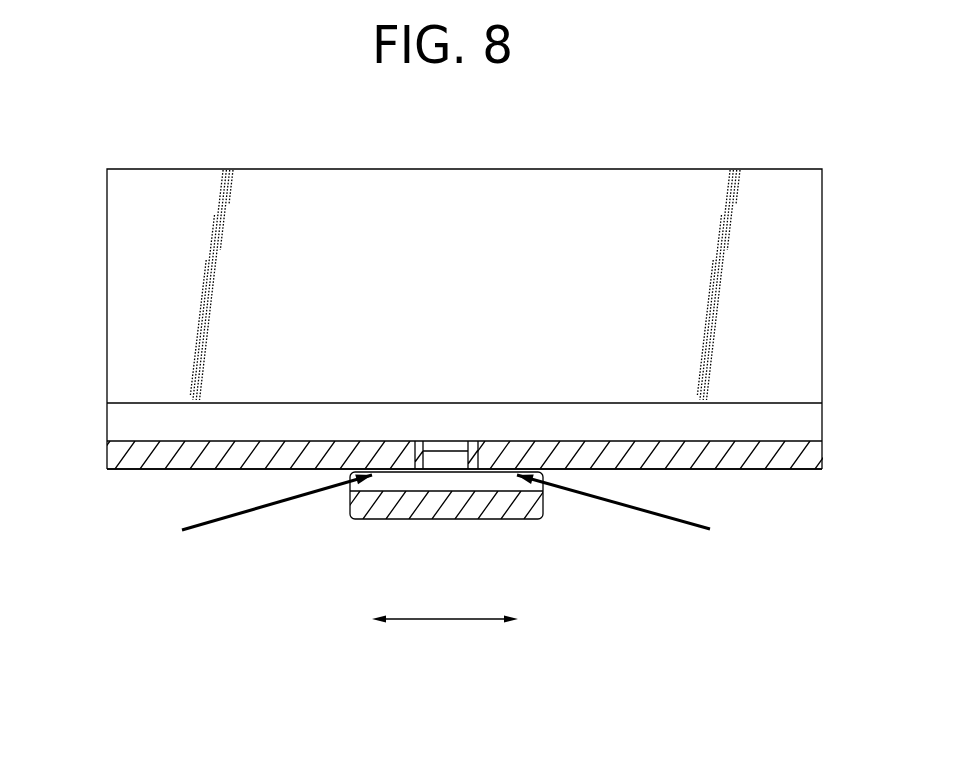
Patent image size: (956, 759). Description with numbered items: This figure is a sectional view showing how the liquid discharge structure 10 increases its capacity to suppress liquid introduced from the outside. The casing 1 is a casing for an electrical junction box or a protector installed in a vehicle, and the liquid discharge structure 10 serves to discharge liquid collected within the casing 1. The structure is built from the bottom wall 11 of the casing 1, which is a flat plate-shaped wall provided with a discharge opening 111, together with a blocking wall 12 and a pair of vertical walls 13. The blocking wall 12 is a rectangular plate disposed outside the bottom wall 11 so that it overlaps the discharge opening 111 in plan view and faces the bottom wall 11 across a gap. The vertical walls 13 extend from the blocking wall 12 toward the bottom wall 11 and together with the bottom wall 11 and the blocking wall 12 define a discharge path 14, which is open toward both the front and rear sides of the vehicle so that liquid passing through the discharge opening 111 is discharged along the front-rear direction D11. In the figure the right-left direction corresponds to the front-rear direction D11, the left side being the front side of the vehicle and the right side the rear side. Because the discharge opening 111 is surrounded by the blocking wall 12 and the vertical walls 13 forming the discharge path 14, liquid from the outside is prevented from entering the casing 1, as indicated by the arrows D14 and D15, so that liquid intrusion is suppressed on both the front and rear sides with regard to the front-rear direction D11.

The casing 1 is at (465, 153).
The liquid discharge structure 10 is at (143, 488).
The bottom wall 11 is at (795, 470).
The discharge opening 111 is at (458, 448).
The blocking wall 12 is at (443, 520).
The vertical walls 13 is at (472, 477).
The discharge path 14 is at (405, 482).
The arrow D14 is at (187, 518).
The arrow D15 is at (682, 519).
The front-rear direction D11 is at (443, 623).